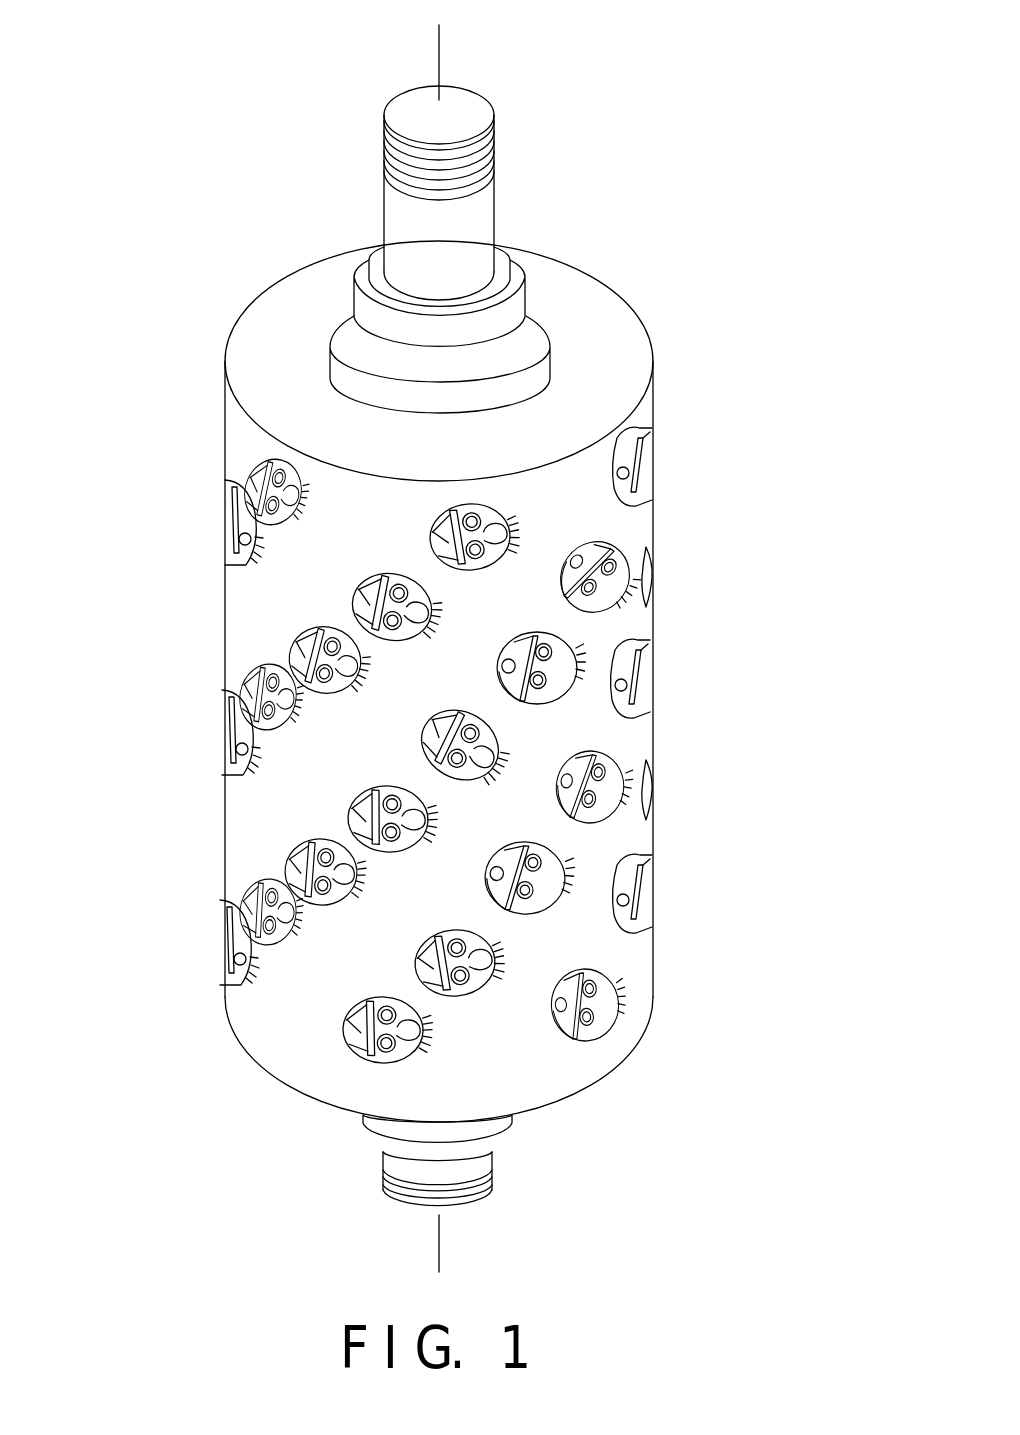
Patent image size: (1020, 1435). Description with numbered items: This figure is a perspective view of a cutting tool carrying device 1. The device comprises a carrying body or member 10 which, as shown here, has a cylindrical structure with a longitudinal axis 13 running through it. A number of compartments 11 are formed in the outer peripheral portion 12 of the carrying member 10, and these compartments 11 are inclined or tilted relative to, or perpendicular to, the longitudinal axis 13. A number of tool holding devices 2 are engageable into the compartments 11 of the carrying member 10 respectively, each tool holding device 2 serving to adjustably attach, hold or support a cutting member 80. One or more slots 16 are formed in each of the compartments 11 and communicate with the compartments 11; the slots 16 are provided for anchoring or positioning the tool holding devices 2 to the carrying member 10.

The cutting tool carrying device 1 is at (623, 210).
The tool holding device 2 is at (624, 765).
The carrying body or member 10 is at (282, 294).
The compartment 11 is at (420, 1064).
The outer peripheral portion 12 is at (213, 812).
The longitudinal axis 13 is at (457, 59).
The slot 16 is at (247, 895).
The cutting member 80 is at (233, 693).